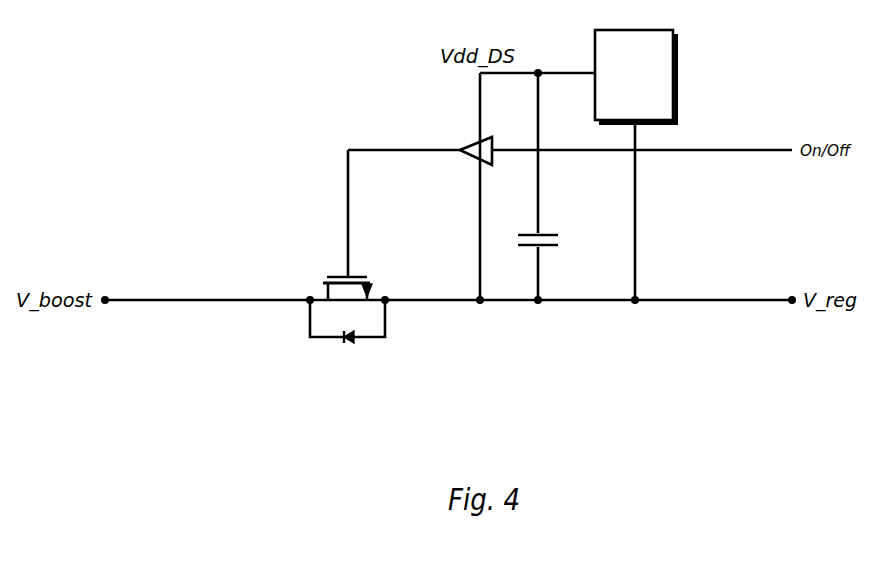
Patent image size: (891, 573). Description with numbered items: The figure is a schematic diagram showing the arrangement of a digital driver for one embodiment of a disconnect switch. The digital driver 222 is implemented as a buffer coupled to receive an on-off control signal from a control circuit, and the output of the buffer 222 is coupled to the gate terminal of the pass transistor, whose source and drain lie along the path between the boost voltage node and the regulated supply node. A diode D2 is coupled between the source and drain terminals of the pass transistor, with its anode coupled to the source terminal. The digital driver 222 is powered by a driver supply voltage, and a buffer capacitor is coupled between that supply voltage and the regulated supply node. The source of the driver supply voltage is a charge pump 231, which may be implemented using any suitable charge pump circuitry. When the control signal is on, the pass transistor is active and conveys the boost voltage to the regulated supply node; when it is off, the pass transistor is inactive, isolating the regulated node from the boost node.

The digital driver 222 is at (472, 138).
The charge pump 231 is at (635, 76).
The diode D2 is at (347, 333).